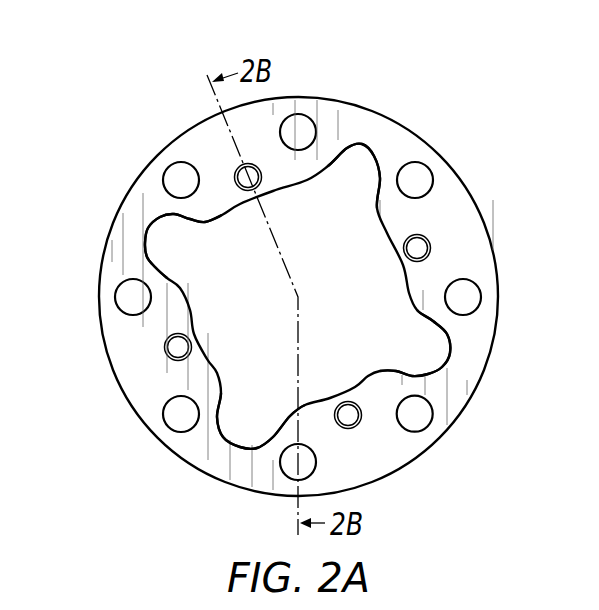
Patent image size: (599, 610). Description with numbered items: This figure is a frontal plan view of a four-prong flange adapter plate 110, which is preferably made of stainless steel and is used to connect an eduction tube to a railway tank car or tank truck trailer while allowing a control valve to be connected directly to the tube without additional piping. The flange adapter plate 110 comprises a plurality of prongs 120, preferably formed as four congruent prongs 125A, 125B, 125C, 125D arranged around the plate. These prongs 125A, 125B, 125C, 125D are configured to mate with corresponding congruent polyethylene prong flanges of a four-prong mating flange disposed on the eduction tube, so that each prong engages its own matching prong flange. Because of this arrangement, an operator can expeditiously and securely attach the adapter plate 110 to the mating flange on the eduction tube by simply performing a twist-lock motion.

The four-prong flange adapter plate 110 is at (365, 93).
The plurality of prongs 120 is at (167, 212).
The prong 125A is at (377, 160).
The prong 125B is at (446, 367).
The prong 125C is at (223, 438).
The prong 125D is at (148, 250).